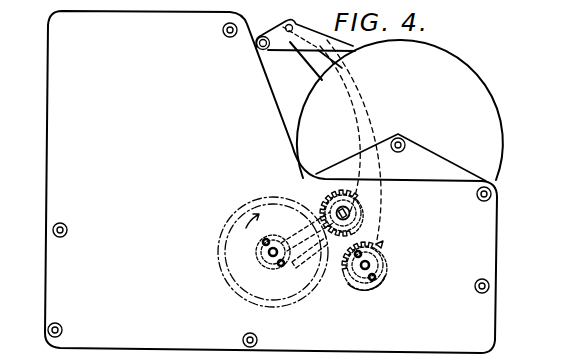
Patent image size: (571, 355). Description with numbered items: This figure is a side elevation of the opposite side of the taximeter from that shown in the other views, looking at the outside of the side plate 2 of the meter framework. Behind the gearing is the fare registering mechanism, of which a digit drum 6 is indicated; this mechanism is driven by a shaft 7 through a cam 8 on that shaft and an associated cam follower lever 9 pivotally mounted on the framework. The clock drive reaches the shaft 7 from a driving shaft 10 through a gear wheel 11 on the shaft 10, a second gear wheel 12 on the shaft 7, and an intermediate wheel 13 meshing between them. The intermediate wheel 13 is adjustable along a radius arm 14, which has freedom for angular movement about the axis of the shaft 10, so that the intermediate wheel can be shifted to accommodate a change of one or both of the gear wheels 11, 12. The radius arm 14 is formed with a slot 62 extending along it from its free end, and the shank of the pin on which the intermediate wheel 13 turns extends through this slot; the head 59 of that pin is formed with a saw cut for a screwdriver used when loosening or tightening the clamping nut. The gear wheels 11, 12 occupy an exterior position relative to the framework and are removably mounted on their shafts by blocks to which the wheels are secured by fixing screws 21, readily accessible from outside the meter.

The side plate 2 is at (487, 313).
The digit drum 6 is at (492, 141).
The shaft 7 is at (371, 269).
The cam 8 is at (365, 296).
The cam follower lever 9 is at (372, 222).
The shaft 10 is at (270, 255).
The gear wheel 11 is at (229, 233).
The second gear wheel 12 is at (382, 246).
The intermediate wheel 13 is at (329, 200).
The radius arm 14 is at (268, 217).
The fixing screws 21 is at (263, 243).
The head 59 is at (350, 213).
The slot 62 is at (285, 262).